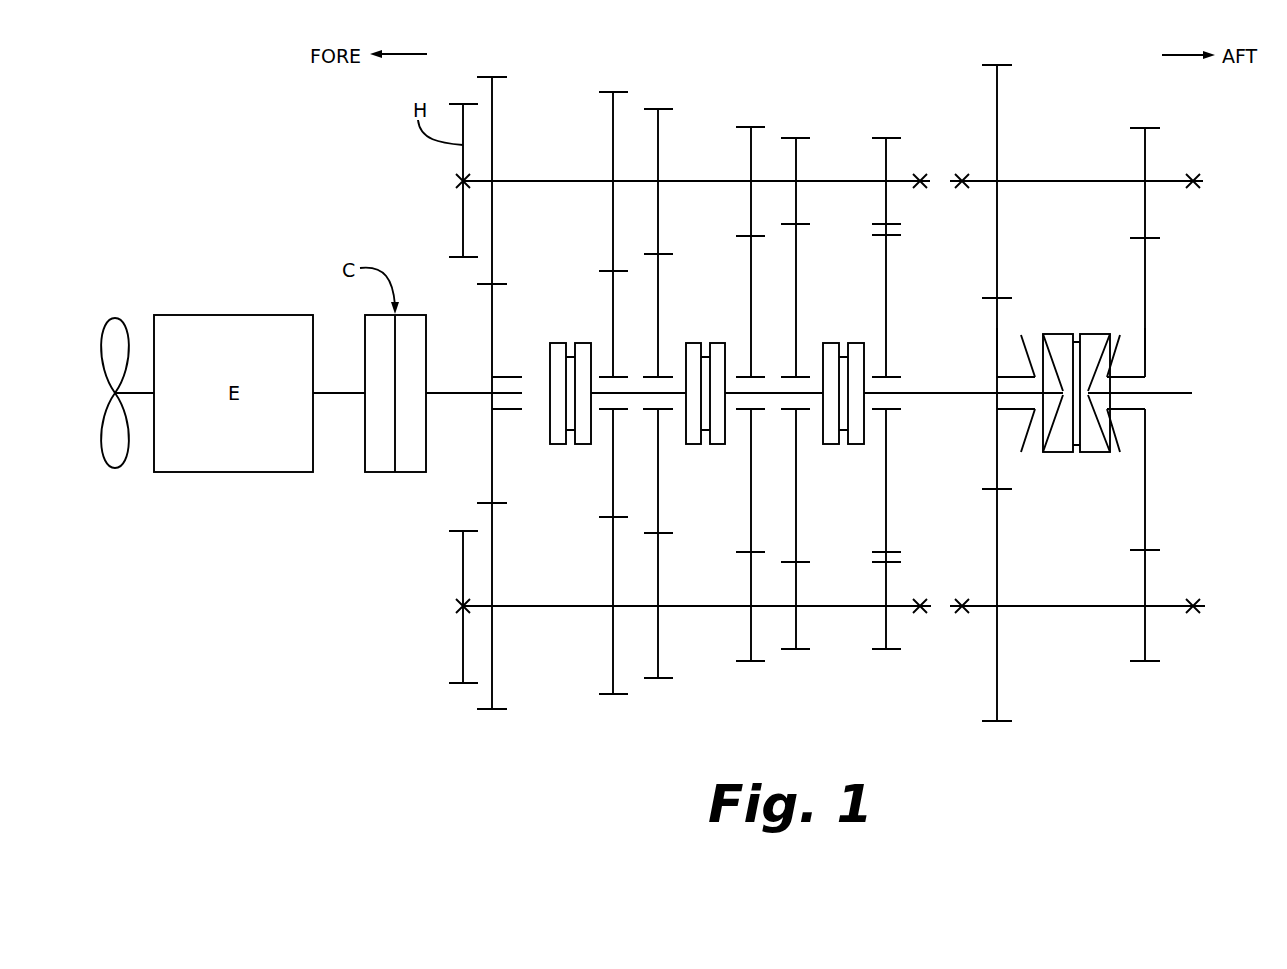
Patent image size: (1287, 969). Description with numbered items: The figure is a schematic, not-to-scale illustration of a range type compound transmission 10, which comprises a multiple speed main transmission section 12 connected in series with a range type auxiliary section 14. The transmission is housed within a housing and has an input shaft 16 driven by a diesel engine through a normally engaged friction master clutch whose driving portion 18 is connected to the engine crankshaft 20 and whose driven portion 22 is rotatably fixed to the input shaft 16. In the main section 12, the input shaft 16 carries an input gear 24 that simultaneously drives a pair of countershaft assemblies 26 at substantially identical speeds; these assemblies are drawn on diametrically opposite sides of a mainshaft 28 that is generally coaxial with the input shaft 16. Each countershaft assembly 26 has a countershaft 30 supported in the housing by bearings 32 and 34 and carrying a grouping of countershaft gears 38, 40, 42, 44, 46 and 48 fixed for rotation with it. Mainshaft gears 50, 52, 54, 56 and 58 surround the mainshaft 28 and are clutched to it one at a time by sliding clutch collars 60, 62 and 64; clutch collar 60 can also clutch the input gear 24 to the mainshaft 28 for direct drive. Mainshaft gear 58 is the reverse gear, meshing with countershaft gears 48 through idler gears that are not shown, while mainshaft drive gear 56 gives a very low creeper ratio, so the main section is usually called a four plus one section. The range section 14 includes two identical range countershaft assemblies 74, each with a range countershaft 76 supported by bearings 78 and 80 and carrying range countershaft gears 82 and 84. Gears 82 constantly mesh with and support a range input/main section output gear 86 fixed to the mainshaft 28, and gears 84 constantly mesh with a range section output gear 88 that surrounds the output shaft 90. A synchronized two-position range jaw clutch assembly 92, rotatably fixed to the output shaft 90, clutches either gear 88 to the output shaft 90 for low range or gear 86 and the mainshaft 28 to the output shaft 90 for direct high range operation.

The compound transmission 10 is at (940, 161).
The main transmission section 12 is at (698, 165).
The range type auxiliary section 14 is at (1067, 68).
The input shaft 16 is at (478, 393).
The driving portion 18 is at (380, 472).
The engine crankshaft 20 is at (339, 393).
The driven portion 22 is at (411, 472).
The input gear 24 is at (493, 330).
The countershaft assemblies 26 is at (581, 181).
The mainshaft 28 is at (973, 395).
The countershaft 30 is at (540, 183).
The bearing 32 is at (458, 604).
The bearing 34 is at (922, 614).
The countershaft gear 38 is at (490, 697).
The countershaft gear 40 is at (612, 678).
The countershaft gear 42 is at (660, 642).
The countershaft gear 44 is at (748, 623).
The countershaft gear 46 is at (798, 631).
The countershaft gear 48 is at (887, 624).
The mainshaft gear 50 is at (613, 497).
The mainshaft gear 52 is at (658, 497).
The mainshaft gear 54 is at (751, 502).
The mainshaft drive gear 56 is at (796, 497).
The mainshaft gear 58 is at (886, 497).
The sliding clutch collar 60 is at (555, 444).
The sliding clutch collar 62 is at (720, 343).
The sliding clutch collar 64 is at (828, 343).
The range countershaft assemblies 74 is at (1031, 179).
The range countershaft 76 is at (1130, 183).
The bearing 78 is at (962, 192).
The bearing 80 is at (1193, 192).
The range countershaft gear 82 is at (997, 212).
The range countershaft gear 84 is at (1145, 153).
The range input/main section output gear 86 is at (997, 328).
The range section output gear 88 is at (1145, 328).
The output shaft 90 is at (1170, 393).
The range jaw clutch assembly 92 is at (1093, 455).